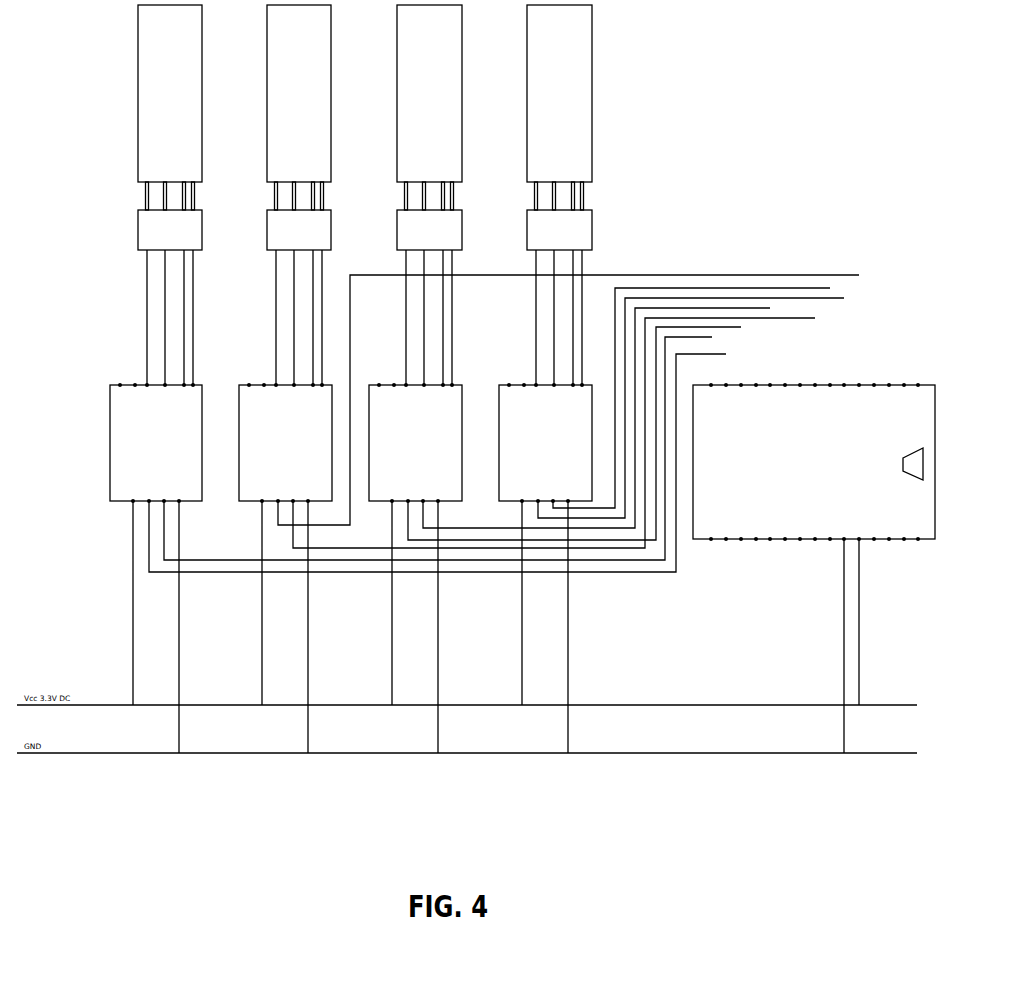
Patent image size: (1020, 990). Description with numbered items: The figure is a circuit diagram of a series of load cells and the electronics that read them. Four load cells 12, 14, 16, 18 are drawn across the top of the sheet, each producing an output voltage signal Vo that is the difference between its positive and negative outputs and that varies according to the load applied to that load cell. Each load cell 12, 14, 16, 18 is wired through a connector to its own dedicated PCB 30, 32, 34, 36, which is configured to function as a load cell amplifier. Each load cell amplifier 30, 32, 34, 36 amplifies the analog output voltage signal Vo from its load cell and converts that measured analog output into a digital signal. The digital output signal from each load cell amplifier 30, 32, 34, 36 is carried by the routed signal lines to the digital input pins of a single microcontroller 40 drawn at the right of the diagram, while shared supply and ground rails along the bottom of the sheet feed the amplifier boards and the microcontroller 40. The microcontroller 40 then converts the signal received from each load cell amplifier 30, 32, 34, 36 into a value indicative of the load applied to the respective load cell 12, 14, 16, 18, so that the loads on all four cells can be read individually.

The load cell 12 is at (170, 195).
The load cell 14 is at (299, 195).
The load cell 16 is at (429, 195).
The load cell 18 is at (559, 195).
The PCB 30 is at (418, 545).
The PCB 32 is at (549, 514).
The PCB 34 is at (569, 530).
The PCB 36 is at (671, 520).
The microcontroller 40 is at (814, 568).